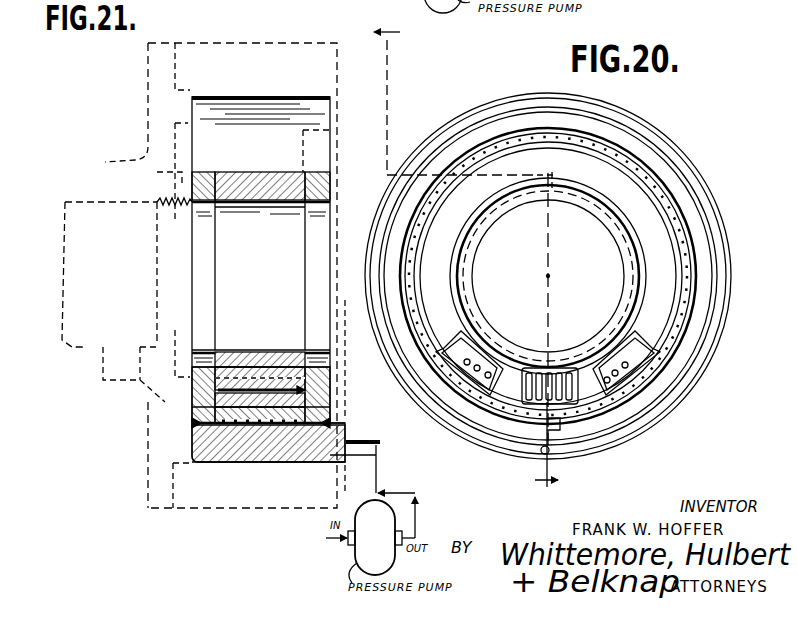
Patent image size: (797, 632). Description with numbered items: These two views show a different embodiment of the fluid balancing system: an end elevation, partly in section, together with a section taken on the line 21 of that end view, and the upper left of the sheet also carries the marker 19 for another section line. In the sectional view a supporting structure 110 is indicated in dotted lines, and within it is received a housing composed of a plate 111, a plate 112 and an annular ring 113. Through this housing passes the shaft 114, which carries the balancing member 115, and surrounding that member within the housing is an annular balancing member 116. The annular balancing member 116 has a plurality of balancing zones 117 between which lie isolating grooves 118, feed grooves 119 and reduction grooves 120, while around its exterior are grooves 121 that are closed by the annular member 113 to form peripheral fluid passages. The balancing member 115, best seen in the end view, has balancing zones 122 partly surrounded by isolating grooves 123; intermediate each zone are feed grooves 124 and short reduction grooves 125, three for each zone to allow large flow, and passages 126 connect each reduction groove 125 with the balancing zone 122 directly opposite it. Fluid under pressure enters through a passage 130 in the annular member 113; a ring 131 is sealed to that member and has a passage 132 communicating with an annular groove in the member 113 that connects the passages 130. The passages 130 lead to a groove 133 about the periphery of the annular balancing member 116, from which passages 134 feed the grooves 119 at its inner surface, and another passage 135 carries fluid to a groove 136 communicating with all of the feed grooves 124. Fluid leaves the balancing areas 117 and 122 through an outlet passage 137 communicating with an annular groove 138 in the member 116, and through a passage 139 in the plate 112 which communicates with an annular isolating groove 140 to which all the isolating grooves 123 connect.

In FIG. 21, the section line 19 is at (298, 28).
In FIG. 20, the section line 21 is at (466, 258).
In FIG. 21, the supporting structure 110 is at (148, 489).
In FIG. 21, the plate 111 is at (330, 372).
In FIG. 21, the plate 112 is at (192, 387).
In FIG. 21, the annular ring 113 is at (361, 397).
In FIG. 20, the annular ring 113 is at (730, 247).
In FIG. 21, the shaft 114 is at (188, 275).
In FIG. 21, the balancing member 115 is at (322, 208).
In FIG. 20, the balancing member 115 is at (662, 268).
In FIG. 21, the annular balancing member 116 is at (328, 418).
In FIG. 20, the annular balancing member 116 is at (688, 300).
In FIG. 20, the balancing zones 117 is at (677, 232).
In FIG. 20, the isolating grooves 118 is at (652, 188).
In FIG. 21, the feed grooves 119 is at (245, 410).
In FIG. 20, the feed grooves 119 is at (638, 174).
In FIG. 20, the reduction grooves 120 is at (628, 165).
In FIG. 21, the grooves 121 is at (243, 432).
In FIG. 20, the balancing zones 122 is at (640, 352).
In FIG. 20, the isolating grooves 123 is at (668, 333).
In FIG. 20, the feed grooves 124 is at (526, 392).
In FIG. 20, the reduction grooves 125 is at (534, 385).
In FIG. 21, the passages 126 is at (328, 392).
In FIG. 20, the passages 126 is at (487, 377).
In FIG. 21, the passage 130 is at (302, 430).
In FIG. 20, the passage 130 is at (562, 457).
In FIG. 21, the ring 131 is at (375, 459).
In FIG. 21, the passage 132 is at (380, 446).
In FIG. 21, the groove 133 is at (283, 432).
In FIG. 21, the passages 134 is at (240, 430).
In FIG. 21, the passage 135 is at (330, 407).
In FIG. 21, the groove 136 is at (322, 365).
In FIG. 20, the groove 136 is at (457, 299).
In FIG. 21, the outlet passage 137 is at (192, 437).
In FIG. 21, the annular groove 138 is at (210, 462).
In FIG. 21, the passage 139 is at (190, 422).
In FIG. 20, the annular isolating groove 140 is at (420, 272).